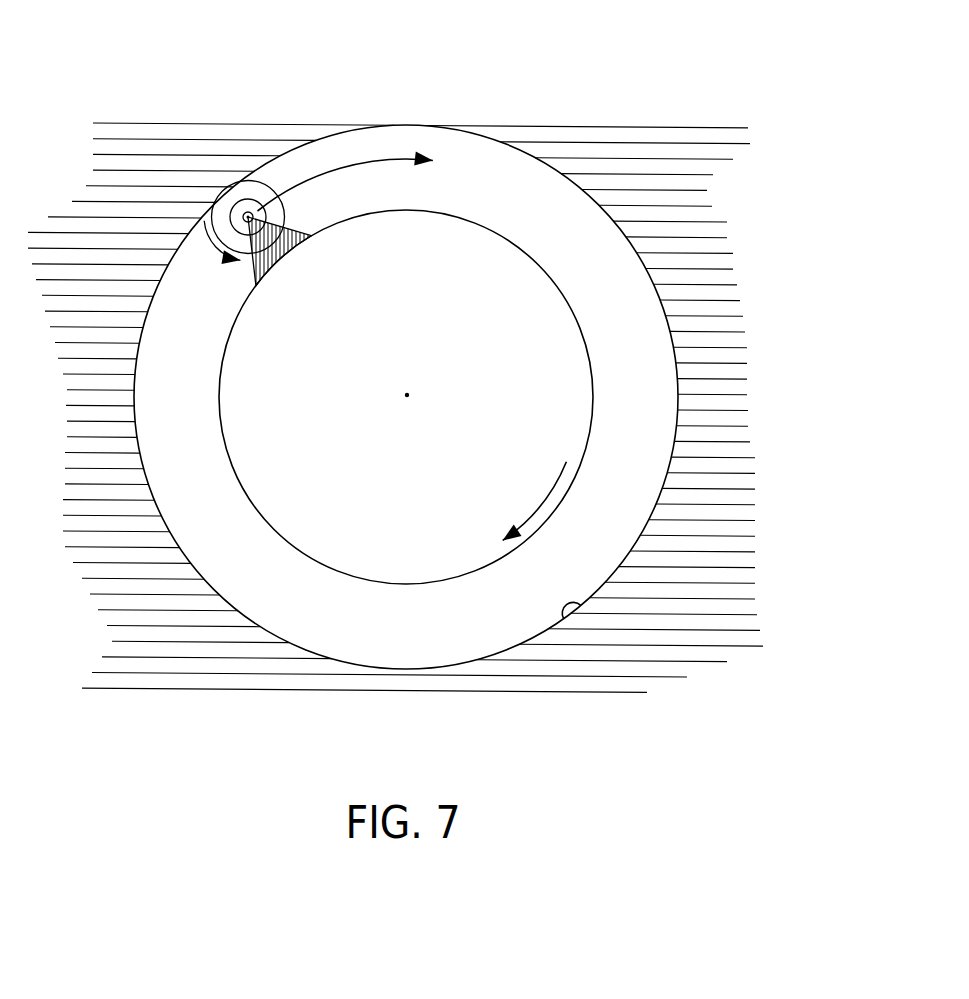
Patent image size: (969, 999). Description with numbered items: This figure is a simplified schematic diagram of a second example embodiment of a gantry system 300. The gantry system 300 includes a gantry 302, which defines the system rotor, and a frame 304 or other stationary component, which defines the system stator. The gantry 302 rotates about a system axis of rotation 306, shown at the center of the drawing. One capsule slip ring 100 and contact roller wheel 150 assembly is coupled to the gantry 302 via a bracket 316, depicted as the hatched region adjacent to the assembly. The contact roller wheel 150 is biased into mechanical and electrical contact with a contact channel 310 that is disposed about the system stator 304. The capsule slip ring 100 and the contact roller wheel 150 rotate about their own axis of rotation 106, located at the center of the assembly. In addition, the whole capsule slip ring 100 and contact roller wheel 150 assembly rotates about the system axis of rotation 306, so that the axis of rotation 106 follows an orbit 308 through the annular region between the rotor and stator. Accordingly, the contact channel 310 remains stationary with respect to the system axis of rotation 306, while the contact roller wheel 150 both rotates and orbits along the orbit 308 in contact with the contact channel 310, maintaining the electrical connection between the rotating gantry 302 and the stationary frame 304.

The capsule slip ring 100 is at (174, 162).
The axis of rotation 106 is at (250, 213).
The contact roller wheel 150 is at (236, 185).
The gantry system 300 is at (456, 384).
The gantry 302 is at (531, 258).
The frame 304 is at (618, 197).
The system axis of rotation 306 is at (408, 396).
The orbit 308 is at (360, 163).
The contact channel 310 is at (573, 604).
The bracket 316 is at (306, 234).